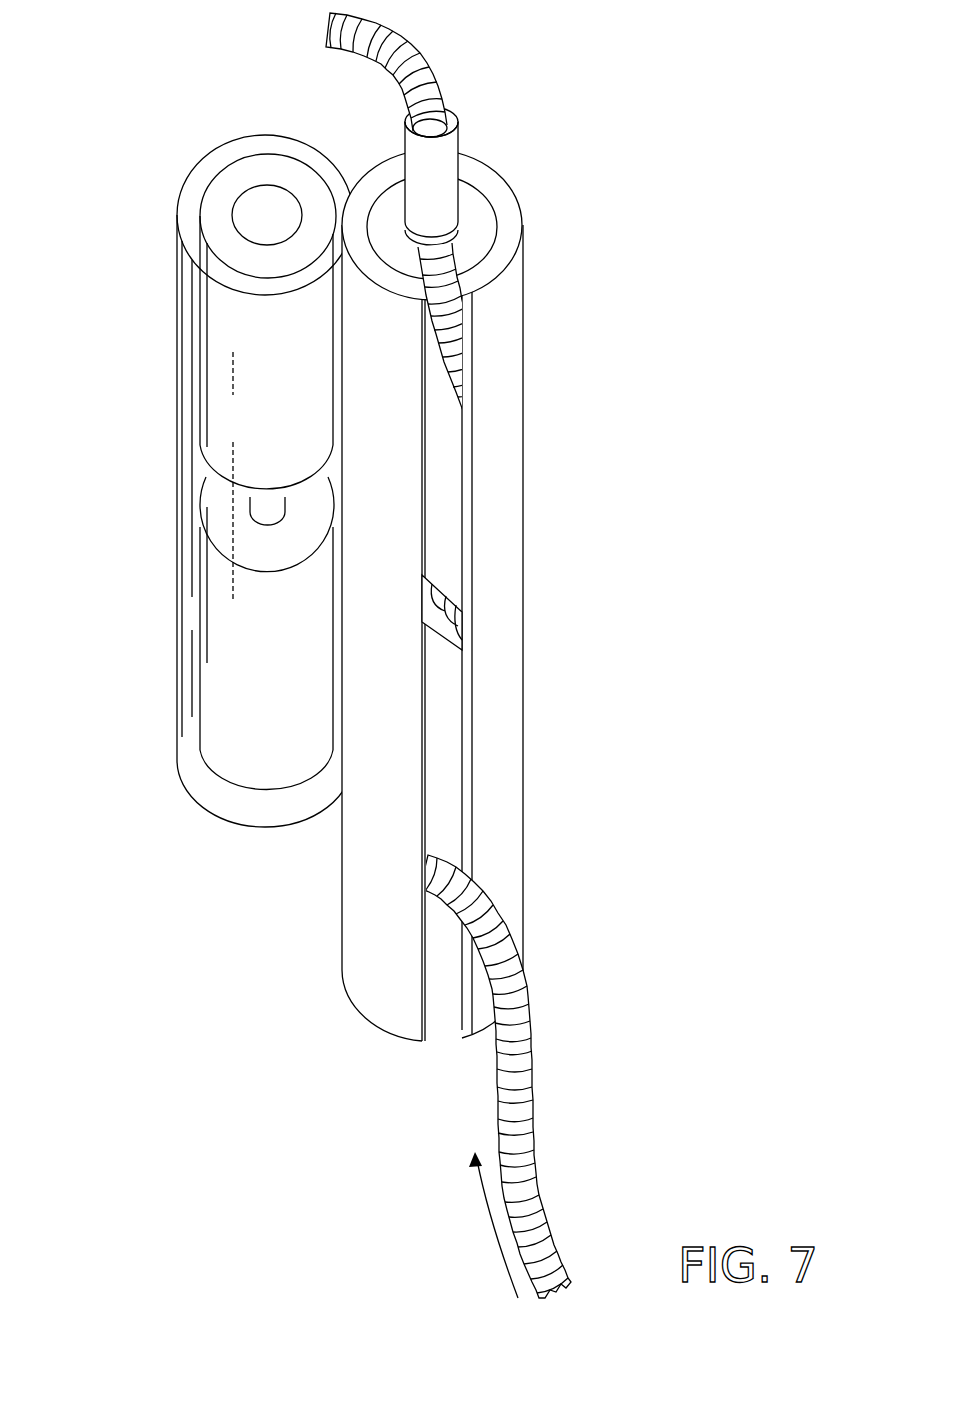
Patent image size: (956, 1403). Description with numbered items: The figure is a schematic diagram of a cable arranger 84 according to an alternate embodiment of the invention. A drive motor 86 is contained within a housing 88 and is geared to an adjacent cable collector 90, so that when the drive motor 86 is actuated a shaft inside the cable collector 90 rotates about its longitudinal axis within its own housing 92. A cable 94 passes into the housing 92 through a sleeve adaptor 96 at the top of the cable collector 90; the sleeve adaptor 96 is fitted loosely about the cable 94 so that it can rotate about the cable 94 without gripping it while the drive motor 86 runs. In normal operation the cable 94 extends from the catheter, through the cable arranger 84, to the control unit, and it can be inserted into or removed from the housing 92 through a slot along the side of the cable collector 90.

The cable arranger 84 is at (388, 649).
The drive motor 86 is at (223, 710).
The housing 88 is at (185, 457).
The cable collector 90 is at (523, 577).
The housing 92 is at (365, 1022).
The cable 94 is at (427, 53).
The sleeve adaptor 96 is at (455, 141).